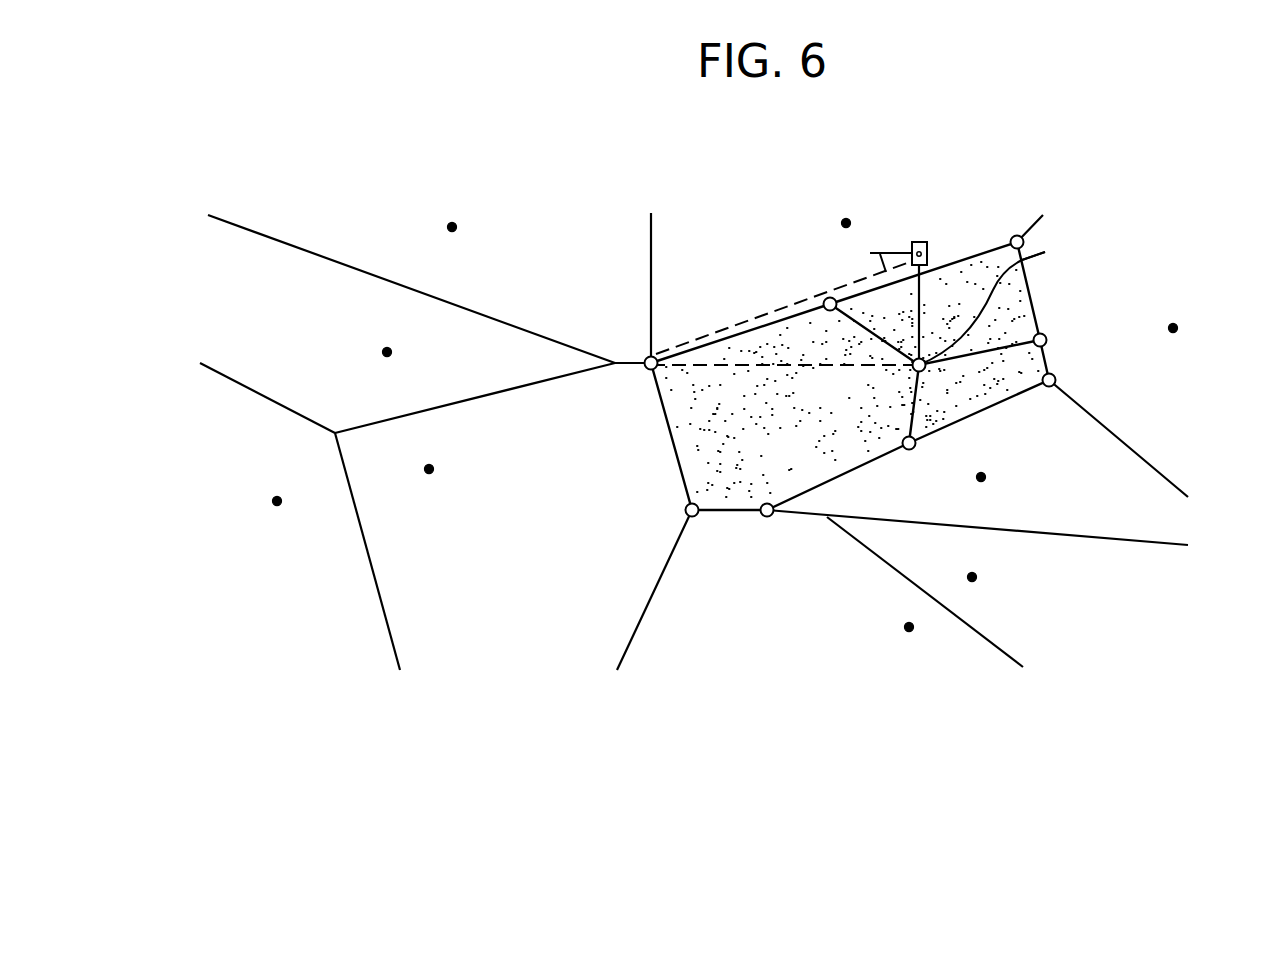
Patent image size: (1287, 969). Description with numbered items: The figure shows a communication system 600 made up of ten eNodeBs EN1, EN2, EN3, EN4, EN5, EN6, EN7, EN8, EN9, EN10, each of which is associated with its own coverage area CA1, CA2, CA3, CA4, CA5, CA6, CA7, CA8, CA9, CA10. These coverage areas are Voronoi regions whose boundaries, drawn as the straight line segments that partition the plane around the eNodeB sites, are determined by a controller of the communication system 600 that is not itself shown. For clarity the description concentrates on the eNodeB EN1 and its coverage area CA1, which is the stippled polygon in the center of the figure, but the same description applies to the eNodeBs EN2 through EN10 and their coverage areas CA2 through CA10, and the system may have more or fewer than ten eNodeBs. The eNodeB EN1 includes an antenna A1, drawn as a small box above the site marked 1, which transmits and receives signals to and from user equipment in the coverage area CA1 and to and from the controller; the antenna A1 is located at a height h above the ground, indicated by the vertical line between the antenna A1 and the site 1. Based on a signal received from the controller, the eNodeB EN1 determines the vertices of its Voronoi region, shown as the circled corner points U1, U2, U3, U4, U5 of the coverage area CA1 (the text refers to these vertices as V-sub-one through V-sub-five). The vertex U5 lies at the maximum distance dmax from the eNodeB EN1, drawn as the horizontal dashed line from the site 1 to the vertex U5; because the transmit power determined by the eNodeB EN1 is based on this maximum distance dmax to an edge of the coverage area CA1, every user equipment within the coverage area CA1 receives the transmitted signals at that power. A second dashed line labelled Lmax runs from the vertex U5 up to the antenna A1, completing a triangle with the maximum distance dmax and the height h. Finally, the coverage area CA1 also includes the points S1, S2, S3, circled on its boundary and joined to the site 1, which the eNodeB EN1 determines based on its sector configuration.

The communication system 600 is at (1117, 142).
The coverage area CA1 is at (850, 376).
The coverage area CA2 is at (1118, 438).
The coverage area CA3 is at (977, 521).
The coverage area CA4 is at (952, 592).
The coverage area CA5 is at (708, 590).
The coverage area CA6 is at (493, 462).
The coverage area CA7 is at (316, 551).
The coverage area CA8 is at (267, 398).
The coverage area CA9 is at (411, 289).
The coverage area CA10 is at (847, 259).
The eNodeB EN1 is at (1058, 254).
The eNodeB EN2 is at (1176, 325).
The eNodeB EN3 is at (985, 475).
The eNodeB EN4 is at (977, 575).
The eNodeB EN5 is at (909, 632).
The eNodeB EN6 is at (434, 469).
The eNodeB EN7 is at (274, 505).
The eNodeB EN8 is at (383, 352).
The eNodeB EN9 is at (457, 226).
The eNodeB EN10 is at (849, 219).
The vertex of Voronoi region U1 is at (1019, 235).
The vertex of Voronoi region U2 is at (1056, 378).
The vertex of Voronoi region U3 is at (767, 517).
The vertex of Voronoi region U4 is at (685, 510).
The vertex of Voronoi region U5 is at (646, 358).
The sector point S1 is at (1047, 338).
The sector point S2 is at (910, 450).
The sector point S3 is at (834, 298).
The antenna A1 is at (928, 246).
The center node 1 is at (937, 347).
The antenna height h is at (932, 312).
The maximum length Lmax is at (783, 307).
The maximum distance dmax is at (781, 383).